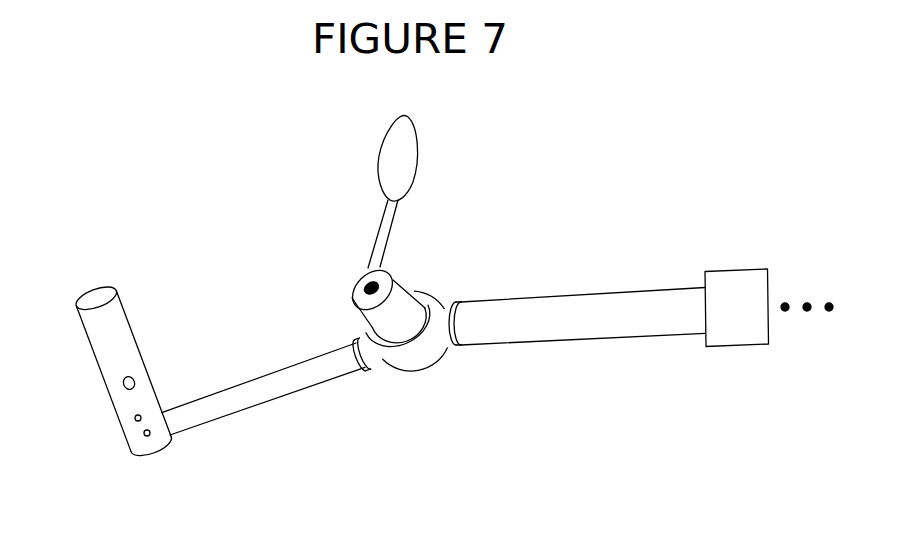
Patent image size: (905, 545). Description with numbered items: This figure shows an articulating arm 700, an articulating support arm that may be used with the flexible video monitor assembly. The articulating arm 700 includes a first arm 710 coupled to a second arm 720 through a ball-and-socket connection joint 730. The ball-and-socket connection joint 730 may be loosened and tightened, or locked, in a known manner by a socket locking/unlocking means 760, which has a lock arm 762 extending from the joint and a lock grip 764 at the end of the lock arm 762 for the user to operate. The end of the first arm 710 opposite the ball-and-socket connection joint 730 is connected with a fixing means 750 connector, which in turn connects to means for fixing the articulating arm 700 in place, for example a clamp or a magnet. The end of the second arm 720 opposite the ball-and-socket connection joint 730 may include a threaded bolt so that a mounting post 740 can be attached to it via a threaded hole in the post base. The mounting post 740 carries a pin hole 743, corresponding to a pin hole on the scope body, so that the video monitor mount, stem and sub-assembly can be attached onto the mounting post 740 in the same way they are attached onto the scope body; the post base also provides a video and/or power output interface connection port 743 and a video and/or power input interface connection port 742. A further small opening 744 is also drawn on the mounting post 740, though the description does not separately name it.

The articulating arm 700 is at (436, 510).
The first arm 710 is at (585, 305).
The second arm 720 is at (247, 392).
The ball-and-socket connection joint 730 is at (418, 356).
The mounting post 740 is at (120, 303).
The video and/or power input interface connection port 742 is at (135, 419).
The pin hole / video and/or power output interface connection port 743 is at (123, 383).
The small aperture 744 is at (151, 439).
The fixing means connector 750 is at (747, 335).
The socket locking/unlocking means 760 is at (407, 228).
The lock arm 762 is at (377, 237).
The lock grip 764 is at (415, 137).